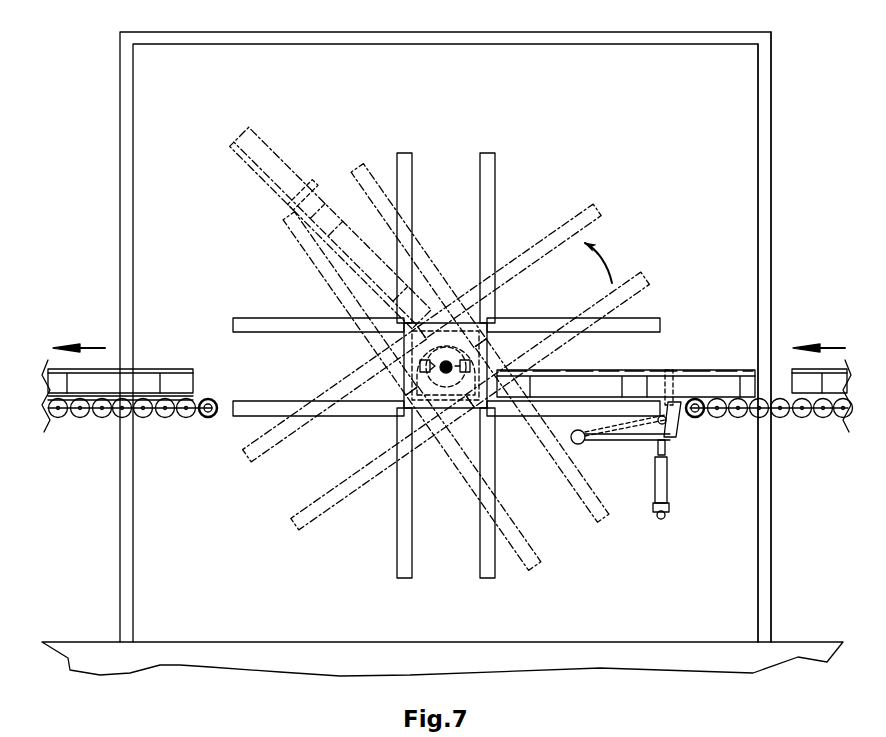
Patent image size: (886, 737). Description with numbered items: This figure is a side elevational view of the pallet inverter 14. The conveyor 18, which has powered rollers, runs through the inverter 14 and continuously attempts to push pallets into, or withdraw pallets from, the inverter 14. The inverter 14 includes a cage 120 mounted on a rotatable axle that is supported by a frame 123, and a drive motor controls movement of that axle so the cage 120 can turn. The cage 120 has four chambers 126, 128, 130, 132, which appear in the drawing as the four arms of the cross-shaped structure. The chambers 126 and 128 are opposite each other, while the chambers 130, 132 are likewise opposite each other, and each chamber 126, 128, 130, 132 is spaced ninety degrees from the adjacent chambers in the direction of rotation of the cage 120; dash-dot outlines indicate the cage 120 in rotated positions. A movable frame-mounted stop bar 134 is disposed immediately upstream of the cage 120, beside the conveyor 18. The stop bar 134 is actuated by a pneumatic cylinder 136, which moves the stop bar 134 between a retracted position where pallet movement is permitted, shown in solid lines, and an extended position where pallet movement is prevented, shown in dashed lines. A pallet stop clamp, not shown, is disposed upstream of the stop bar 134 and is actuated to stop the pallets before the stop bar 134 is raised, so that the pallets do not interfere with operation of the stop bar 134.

The inverter 14 is at (103, 58).
The conveyor 18 is at (73, 418).
The cage 120 is at (465, 362).
The frame 123 is at (763, 107).
The chamber 126 is at (465, 341).
The chamber 128 is at (443, 565).
The chamber 130 is at (248, 350).
The chamber 132 is at (638, 347).
The stop bar 134 is at (678, 427).
The pneumatic cylinder 136 is at (662, 487).